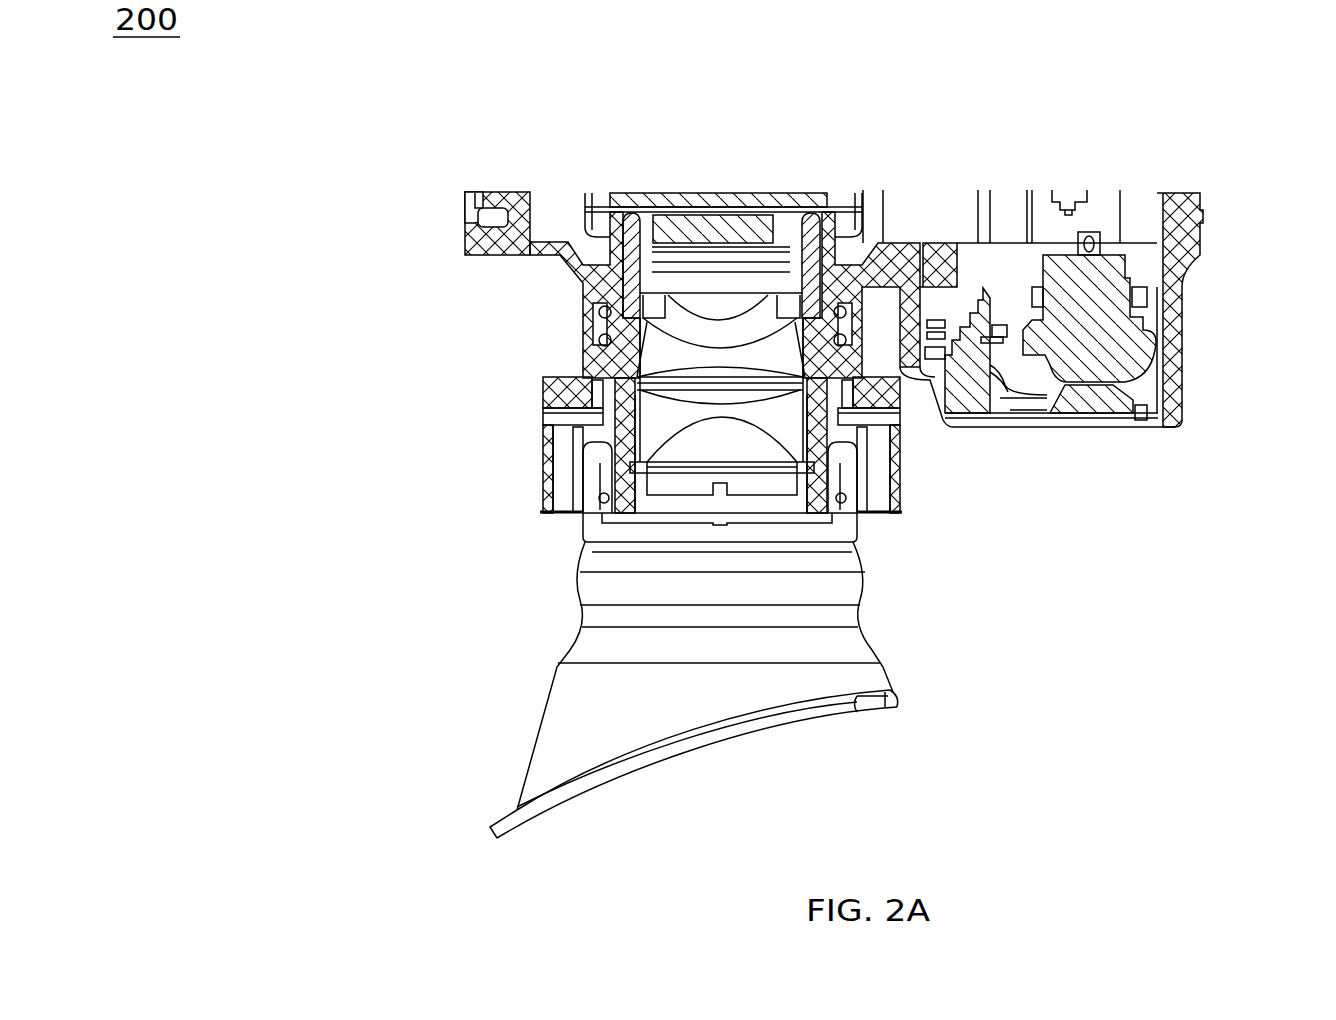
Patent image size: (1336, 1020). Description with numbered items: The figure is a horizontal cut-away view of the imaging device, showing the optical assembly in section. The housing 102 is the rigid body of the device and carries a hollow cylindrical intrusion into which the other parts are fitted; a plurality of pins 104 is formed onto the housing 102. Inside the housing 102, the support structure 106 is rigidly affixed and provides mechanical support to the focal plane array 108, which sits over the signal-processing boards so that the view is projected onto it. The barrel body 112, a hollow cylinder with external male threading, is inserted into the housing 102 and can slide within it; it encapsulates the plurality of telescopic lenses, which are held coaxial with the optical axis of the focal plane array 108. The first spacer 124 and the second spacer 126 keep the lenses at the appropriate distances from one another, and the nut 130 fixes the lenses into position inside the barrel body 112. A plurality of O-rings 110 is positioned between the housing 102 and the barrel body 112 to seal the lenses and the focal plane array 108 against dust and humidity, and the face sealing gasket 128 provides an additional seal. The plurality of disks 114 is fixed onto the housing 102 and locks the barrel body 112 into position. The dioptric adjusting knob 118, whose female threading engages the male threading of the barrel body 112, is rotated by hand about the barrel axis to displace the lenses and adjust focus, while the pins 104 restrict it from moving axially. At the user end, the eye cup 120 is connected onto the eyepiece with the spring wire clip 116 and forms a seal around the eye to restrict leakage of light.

The housing 102 is at (483, 243).
The plurality of pins 104 is at (790, 225).
The support structure 106 is at (825, 212).
The focal plane array 108 is at (687, 240).
The plurality of O-rings 110 is at (590, 343).
The barrel body 112 is at (587, 362).
The plurality of disks 114 is at (553, 417).
The spring wire clip 116 is at (838, 422).
The dioptric adjusting knob 118 is at (888, 473).
The eye cup 120 is at (565, 731).
The first spacer 124 is at (800, 350).
The second spacer 126 is at (840, 420).
The face sealing gasket 128 is at (645, 463).
The nut 130 is at (757, 488).